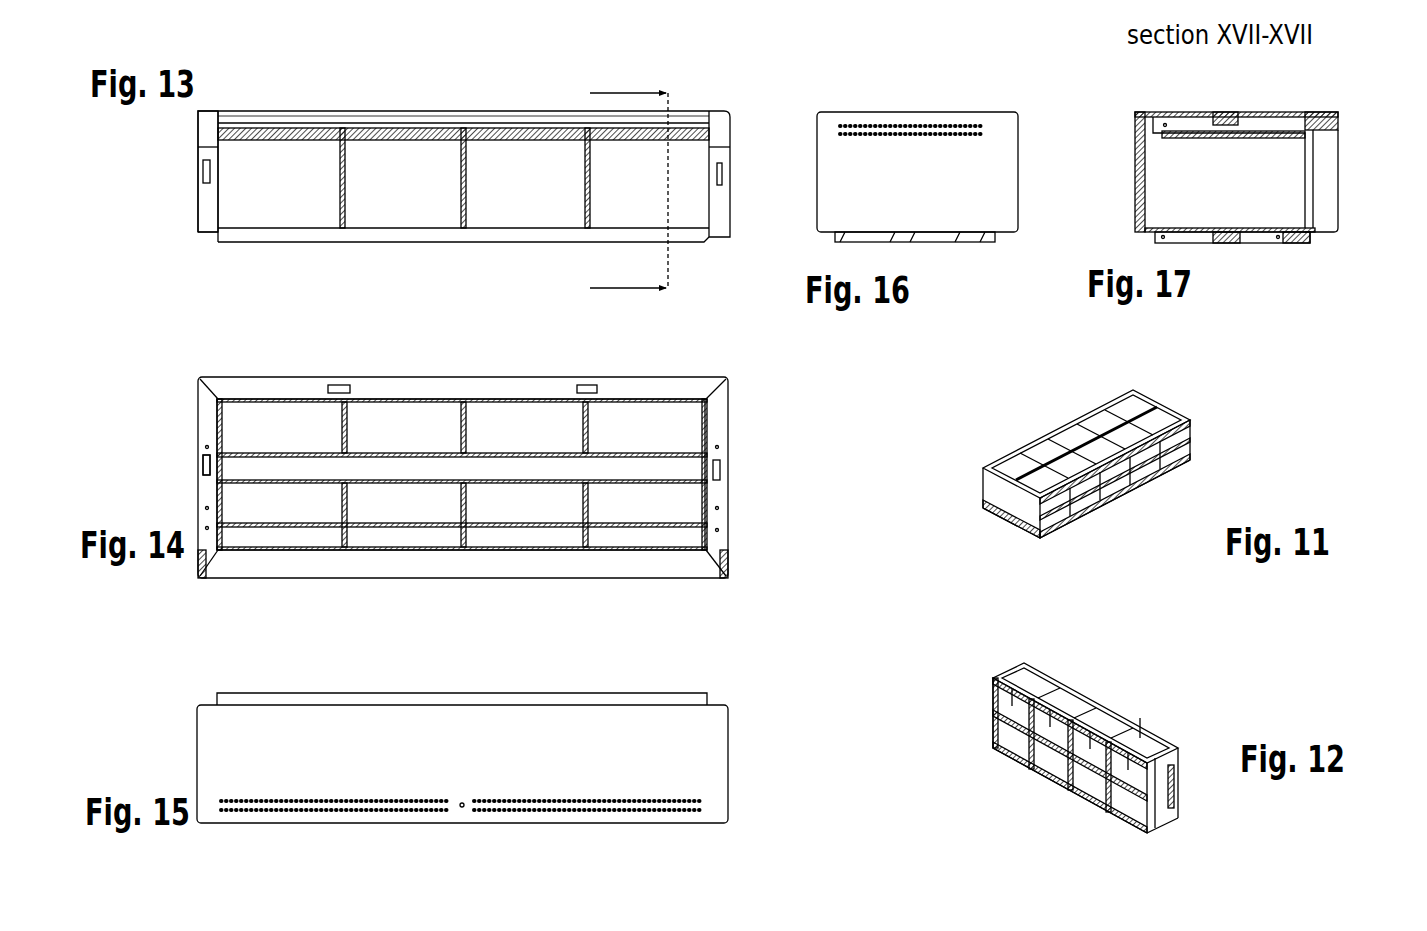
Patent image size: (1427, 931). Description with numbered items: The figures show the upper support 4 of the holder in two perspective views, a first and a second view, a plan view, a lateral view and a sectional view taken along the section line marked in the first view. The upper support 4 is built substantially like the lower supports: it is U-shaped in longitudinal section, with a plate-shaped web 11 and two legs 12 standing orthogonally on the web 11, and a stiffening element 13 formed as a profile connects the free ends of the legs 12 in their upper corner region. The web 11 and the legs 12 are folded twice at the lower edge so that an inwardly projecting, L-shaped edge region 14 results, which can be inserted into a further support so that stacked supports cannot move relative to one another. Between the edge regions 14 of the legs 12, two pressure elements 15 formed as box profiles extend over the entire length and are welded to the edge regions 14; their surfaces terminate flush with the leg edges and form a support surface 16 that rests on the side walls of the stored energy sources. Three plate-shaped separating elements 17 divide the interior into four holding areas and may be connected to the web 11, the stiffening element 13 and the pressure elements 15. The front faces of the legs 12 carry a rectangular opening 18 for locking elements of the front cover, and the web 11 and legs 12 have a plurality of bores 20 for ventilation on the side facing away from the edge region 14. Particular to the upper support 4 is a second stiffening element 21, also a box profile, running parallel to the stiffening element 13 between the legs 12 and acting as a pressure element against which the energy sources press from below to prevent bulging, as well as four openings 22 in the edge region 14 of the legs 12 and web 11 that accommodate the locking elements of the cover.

In FIG. 13, the upper support 4 is at (454, 168).
In FIG. 14, the upper support 4 is at (463, 480).
In FIG. 15, the upper support 4 is at (494, 727).
In FIG. 11, the upper support 4 is at (1090, 488).
In FIG. 12, the upper support 4 is at (1046, 740).
In FIG. 13, the web 11 is at (298, 192).
In FIG. 11, the web 11 is at (1185, 435).
In FIG. 13, the legs 12 is at (205, 214).
In FIG. 11, the legs 12 is at (1040, 540).
In FIG. 13, the stiffening element 13 is at (470, 118).
In FIG. 16, the stiffening element 13 is at (998, 112).
In FIG. 17, the stiffening element 13 is at (1325, 112).
In FIG. 12, the stiffening element 13 is at (1105, 745).
In FIG. 15, the edge region 14 is at (648, 703).
In FIG. 16, the edge region 14 is at (940, 242).
In FIG. 11, the edge region 14 is at (1070, 490).
In FIG. 12, the edge region 14 is at (1075, 790).
In FIG. 14, the pressure elements 15 is at (485, 470).
In FIG. 17, the pressure elements 15 is at (1232, 243).
In FIG. 11, the pressure elements 15 is at (1140, 440).
In FIG. 12, the pressure elements 15 is at (1015, 680).
In FIG. 14, the support surface 16 is at (428, 468).
In FIG. 17, the support surface 16 is at (1310, 243).
In FIG. 13, the separating elements 17 is at (342, 200).
In FIG. 14, the separating elements 17 is at (344, 495).
In FIG. 11, the separating elements 17 is at (1035, 460).
In FIG. 12, the separating elements 17 is at (1055, 700).
In FIG. 13, the rectangular opening 18 is at (205, 170).
In FIG. 13, the bores 20 is at (381, 135).
In FIG. 15, the bores 20 is at (533, 797).
In FIG. 16, the second stiffening element 21 is at (900, 112).
In FIG. 17, the second stiffening element 21 is at (1232, 115).
In FIG. 12, the second stiffening element 21 is at (1135, 715).
In FIG. 14, the openings 22 is at (205, 462).